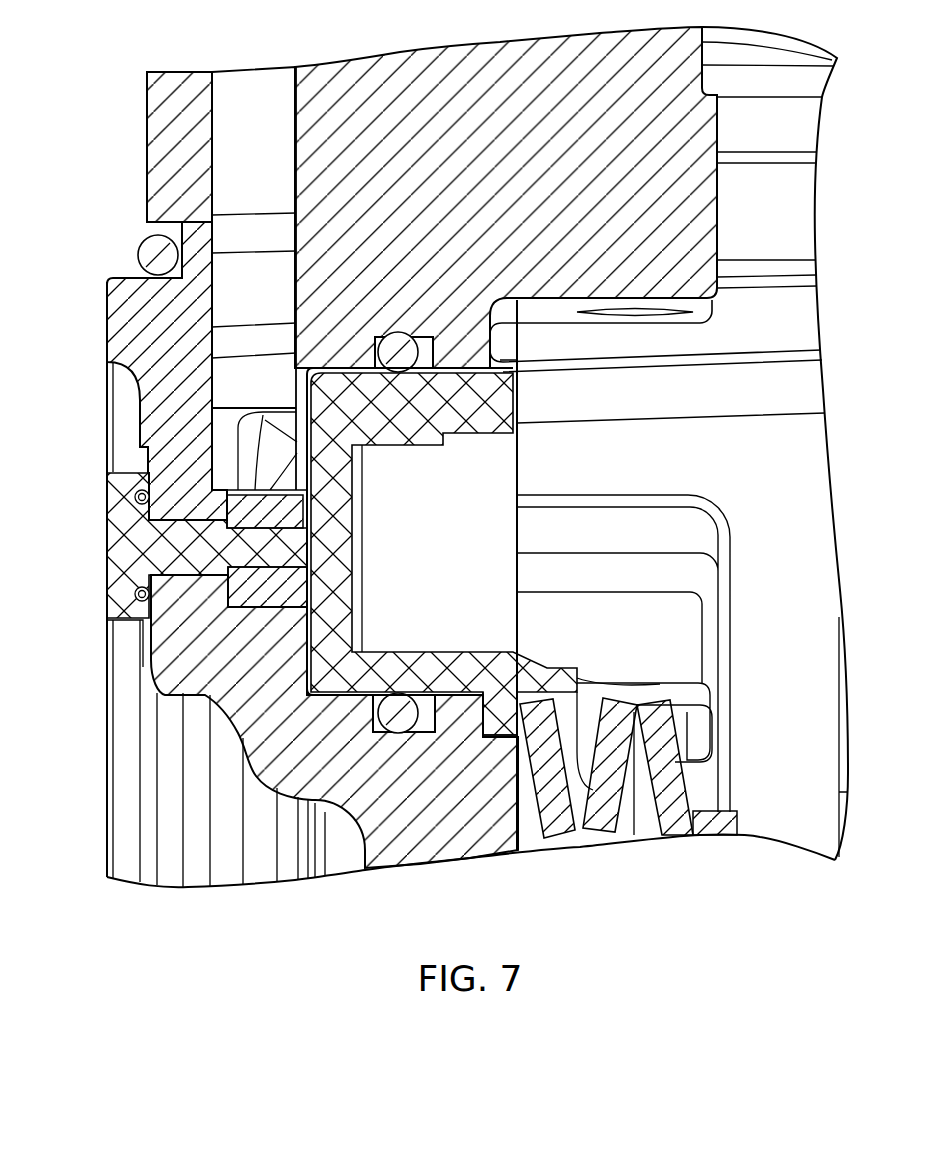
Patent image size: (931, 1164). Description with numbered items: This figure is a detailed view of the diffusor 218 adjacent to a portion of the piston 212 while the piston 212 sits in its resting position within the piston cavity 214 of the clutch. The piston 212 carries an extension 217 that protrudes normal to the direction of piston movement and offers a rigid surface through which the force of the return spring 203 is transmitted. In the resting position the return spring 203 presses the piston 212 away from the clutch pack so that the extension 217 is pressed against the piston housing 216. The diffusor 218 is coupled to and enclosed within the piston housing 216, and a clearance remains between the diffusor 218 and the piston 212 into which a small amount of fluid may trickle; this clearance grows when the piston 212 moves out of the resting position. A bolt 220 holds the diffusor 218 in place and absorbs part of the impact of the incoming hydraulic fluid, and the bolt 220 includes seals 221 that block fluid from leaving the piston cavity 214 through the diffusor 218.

The return spring 203 is at (611, 832).
The piston 212 is at (325, 392).
The piston cavity 214 is at (258, 867).
The piston housing 216 is at (392, 853).
The extension 217 is at (510, 738).
The diffusor 218 is at (257, 585).
The bolt 220 is at (115, 603).
The seals 221 is at (143, 592).